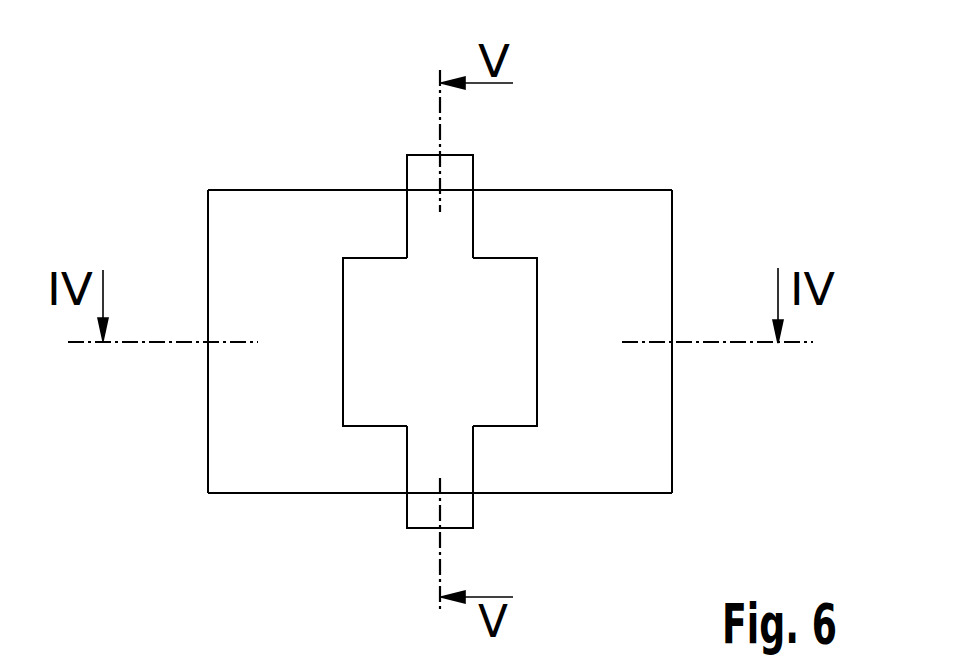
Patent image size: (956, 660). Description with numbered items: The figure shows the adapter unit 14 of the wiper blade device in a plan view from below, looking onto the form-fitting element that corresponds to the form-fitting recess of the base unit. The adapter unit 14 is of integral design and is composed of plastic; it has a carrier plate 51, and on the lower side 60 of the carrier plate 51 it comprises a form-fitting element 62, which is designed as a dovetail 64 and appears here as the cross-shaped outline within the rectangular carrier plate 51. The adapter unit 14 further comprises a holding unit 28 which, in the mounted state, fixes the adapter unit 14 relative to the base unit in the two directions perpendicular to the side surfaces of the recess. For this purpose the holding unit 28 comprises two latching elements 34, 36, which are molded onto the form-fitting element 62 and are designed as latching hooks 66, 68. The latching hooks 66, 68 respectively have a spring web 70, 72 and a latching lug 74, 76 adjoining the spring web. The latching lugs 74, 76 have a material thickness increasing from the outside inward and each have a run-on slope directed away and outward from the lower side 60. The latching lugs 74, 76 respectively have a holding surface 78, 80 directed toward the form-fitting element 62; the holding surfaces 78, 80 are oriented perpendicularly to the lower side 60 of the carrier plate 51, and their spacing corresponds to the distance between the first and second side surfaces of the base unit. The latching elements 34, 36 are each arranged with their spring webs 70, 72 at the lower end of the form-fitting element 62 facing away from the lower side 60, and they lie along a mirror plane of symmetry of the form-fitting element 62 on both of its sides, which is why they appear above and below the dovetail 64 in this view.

The adapter unit 14 is at (655, 203).
The holding unit 28 is at (385, 542).
The latching element 34 is at (458, 138).
The latching element 36 is at (515, 552).
The carrier plate 51 is at (640, 270).
The lower side 60 is at (219, 202).
The form-fitting element 62 is at (578, 342).
The dovetail 64 is at (515, 393).
The latching hook 66 is at (458, 138).
The latching hook 68 is at (515, 552).
The spring web 70 is at (455, 225).
The spring web 72 is at (427, 460).
The latching lug 74 is at (417, 172).
The latching lug 76 is at (463, 508).
The holding surface 78 is at (432, 215).
The holding surface 80 is at (452, 463).